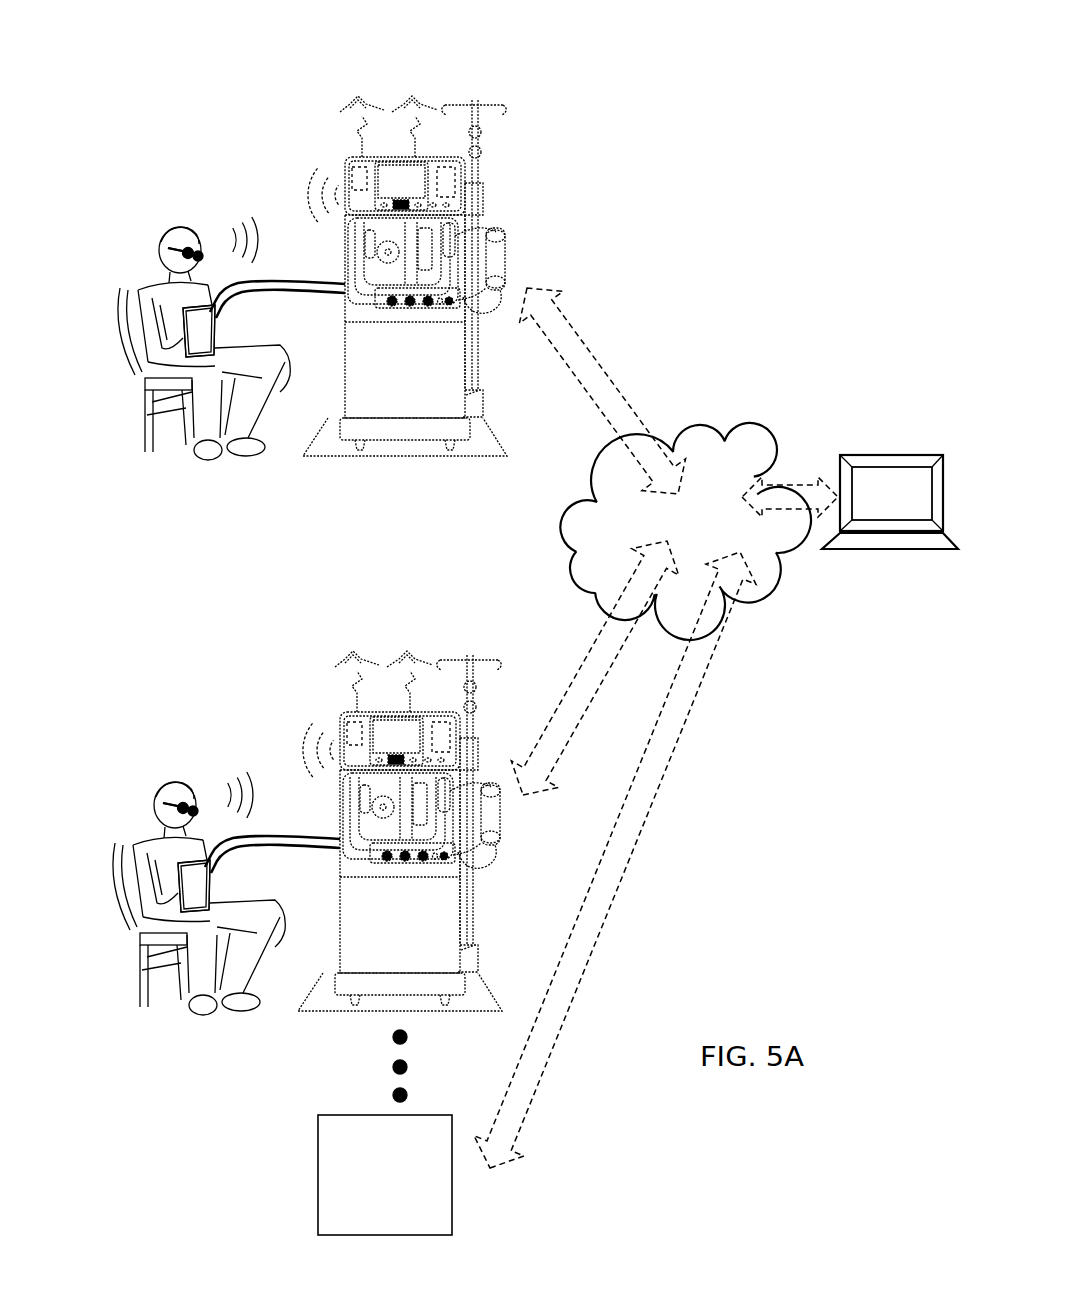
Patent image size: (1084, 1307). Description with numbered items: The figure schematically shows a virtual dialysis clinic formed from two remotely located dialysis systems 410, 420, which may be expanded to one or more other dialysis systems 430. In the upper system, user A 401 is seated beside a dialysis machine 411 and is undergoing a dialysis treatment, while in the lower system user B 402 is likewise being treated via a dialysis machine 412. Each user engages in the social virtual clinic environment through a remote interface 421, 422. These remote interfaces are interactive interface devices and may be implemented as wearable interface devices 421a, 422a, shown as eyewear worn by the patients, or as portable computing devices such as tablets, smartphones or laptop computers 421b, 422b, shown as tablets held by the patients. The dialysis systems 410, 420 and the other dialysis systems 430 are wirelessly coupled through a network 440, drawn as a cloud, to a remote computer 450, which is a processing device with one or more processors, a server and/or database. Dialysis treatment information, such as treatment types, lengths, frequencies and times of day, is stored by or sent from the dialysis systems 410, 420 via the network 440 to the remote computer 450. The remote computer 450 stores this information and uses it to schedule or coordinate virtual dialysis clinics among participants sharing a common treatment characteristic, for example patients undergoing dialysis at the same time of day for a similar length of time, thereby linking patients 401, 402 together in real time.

The user A 401 is at (118, 355).
The user B 402 is at (116, 950).
The dialysis system 410 is at (505, 78).
The dialysis machine 411 is at (428, 388).
The dialysis machine 412 is at (419, 938).
The dialysis system 420 is at (490, 632).
The remote interface 421 is at (175, 142).
The wearable interface device 421a is at (187, 249).
The portable computing device 421b is at (197, 327).
The remote interface 422 is at (173, 706).
The wearable interface device 422a is at (159, 761).
The portable computing device 422b is at (131, 812).
The other dialysis systems 430 is at (385, 1175).
The network 440 is at (750, 472).
The remote computer 450 is at (907, 505).